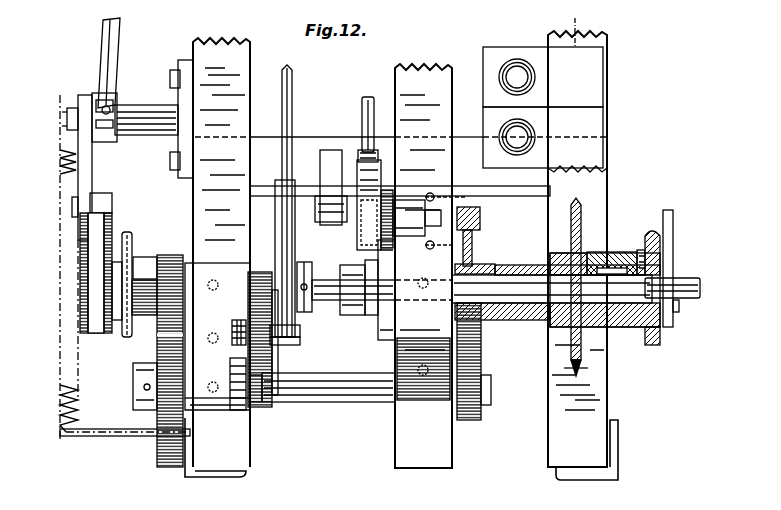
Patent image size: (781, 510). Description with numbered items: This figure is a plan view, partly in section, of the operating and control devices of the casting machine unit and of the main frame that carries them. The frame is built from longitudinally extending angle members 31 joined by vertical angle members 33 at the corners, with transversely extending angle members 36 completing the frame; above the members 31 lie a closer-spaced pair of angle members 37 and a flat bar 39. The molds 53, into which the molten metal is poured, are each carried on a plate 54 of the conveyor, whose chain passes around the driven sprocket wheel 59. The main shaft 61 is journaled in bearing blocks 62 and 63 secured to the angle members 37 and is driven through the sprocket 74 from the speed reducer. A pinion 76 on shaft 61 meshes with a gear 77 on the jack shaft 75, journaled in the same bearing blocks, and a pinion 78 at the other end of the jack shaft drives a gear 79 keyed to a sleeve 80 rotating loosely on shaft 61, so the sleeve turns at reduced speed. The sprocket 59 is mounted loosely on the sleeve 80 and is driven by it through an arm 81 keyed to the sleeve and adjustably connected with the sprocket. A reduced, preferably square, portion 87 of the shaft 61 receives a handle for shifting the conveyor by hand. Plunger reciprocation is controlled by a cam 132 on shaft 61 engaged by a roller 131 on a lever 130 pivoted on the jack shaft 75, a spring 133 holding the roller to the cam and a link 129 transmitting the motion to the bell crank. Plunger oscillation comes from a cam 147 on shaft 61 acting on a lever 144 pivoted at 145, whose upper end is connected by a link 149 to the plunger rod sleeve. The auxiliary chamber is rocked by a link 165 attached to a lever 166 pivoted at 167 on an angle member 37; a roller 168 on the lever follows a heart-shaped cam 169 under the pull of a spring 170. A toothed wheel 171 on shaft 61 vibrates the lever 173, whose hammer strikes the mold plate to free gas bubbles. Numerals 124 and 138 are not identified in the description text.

The longitudinally extending angle members 31 is at (607, 400).
The vertically disposed angle members 33 is at (212, 478).
The transversely extending angle members 36 is at (347, 190).
The angle members 37 is at (210, 205).
The flat bar 39 is at (608, 172).
The molds 53 is at (532, 77).
The plate 54 is at (490, 115).
The sprocket wheel 59 is at (571, 352).
The shaft 61 is at (331, 279).
The bearing block 62 is at (215, 412).
The bearing block 63 is at (425, 408).
The sprocket 74 is at (128, 234).
The jack shaft 75 is at (337, 403).
The pinion 76 is at (170, 257).
The gear 77 is at (166, 462).
The pinion 78 is at (482, 420).
The gear 79 is at (480, 221).
The sleeve 80 is at (514, 268).
The arm 81 is at (621, 250).
The reduced portion 87 is at (700, 282).
The gear 124 is at (407, 215).
The link 129 is at (302, 117).
The lever 130 is at (263, 392).
The roller 131 is at (256, 275).
The cam 132 is at (302, 326).
The spring 133 is at (232, 333).
The lever bar 138 is at (290, 230).
The lever 144 is at (375, 190).
The pivot 145 is at (310, 262).
The cam 147 is at (380, 326).
The link 149 is at (362, 128).
The link 165 is at (107, 48).
The lever 166 is at (85, 160).
The pivot 167 is at (66, 123).
The roller 168 is at (110, 197).
The heart-shaped cam 169 is at (96, 268).
The spring 170 is at (64, 388).
The toothed wheel 171 is at (653, 230).
The lever 173 is at (674, 228).